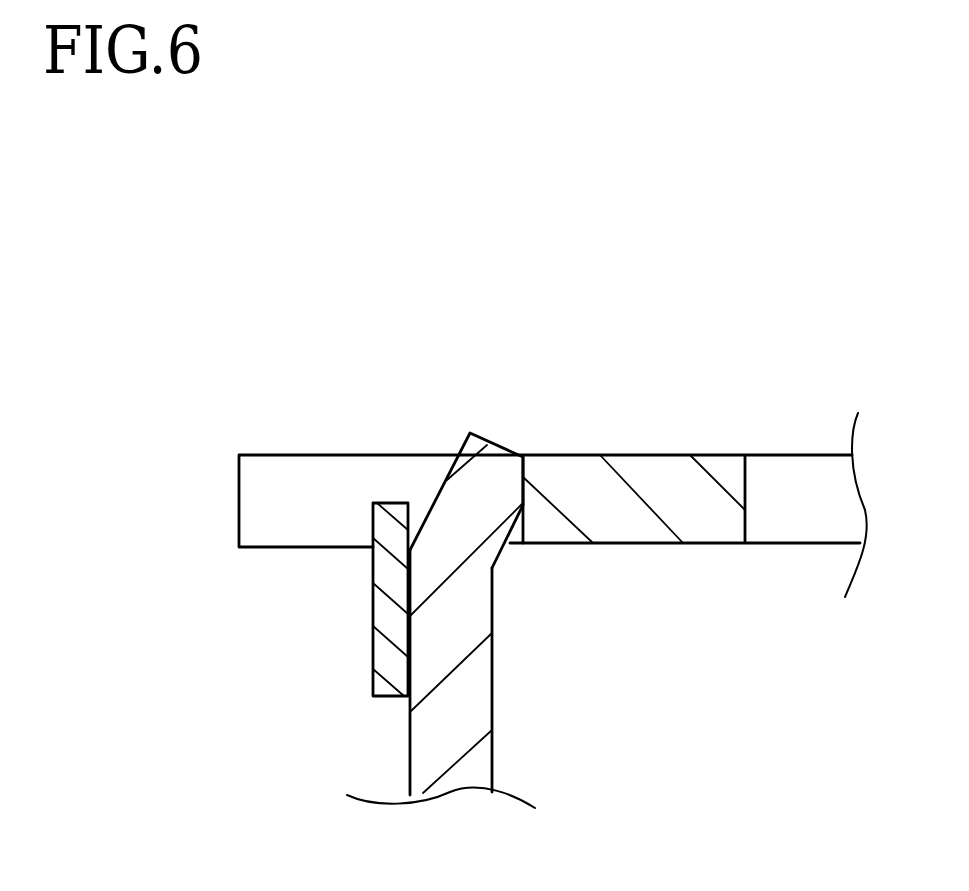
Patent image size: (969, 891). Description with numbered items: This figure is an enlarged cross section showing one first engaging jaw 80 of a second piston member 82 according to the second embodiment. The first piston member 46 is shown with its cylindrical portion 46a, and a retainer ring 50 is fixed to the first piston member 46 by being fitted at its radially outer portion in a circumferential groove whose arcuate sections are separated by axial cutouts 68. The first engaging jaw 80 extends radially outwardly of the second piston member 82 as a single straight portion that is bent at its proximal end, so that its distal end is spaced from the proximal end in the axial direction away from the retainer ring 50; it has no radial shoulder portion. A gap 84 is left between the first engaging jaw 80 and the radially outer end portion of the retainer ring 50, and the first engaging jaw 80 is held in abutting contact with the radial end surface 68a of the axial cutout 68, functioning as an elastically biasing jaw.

The first piston member 46 is at (667, 324).
The cylindrical portion 46a is at (680, 487).
The axial cutout 68 is at (317, 487).
The radial end surface 68a is at (515, 542).
The first engaging jaw 80 is at (480, 498).
The second piston member 82 is at (547, 743).
The gap 84 is at (418, 497).
The retainer ring 50 is at (383, 620).